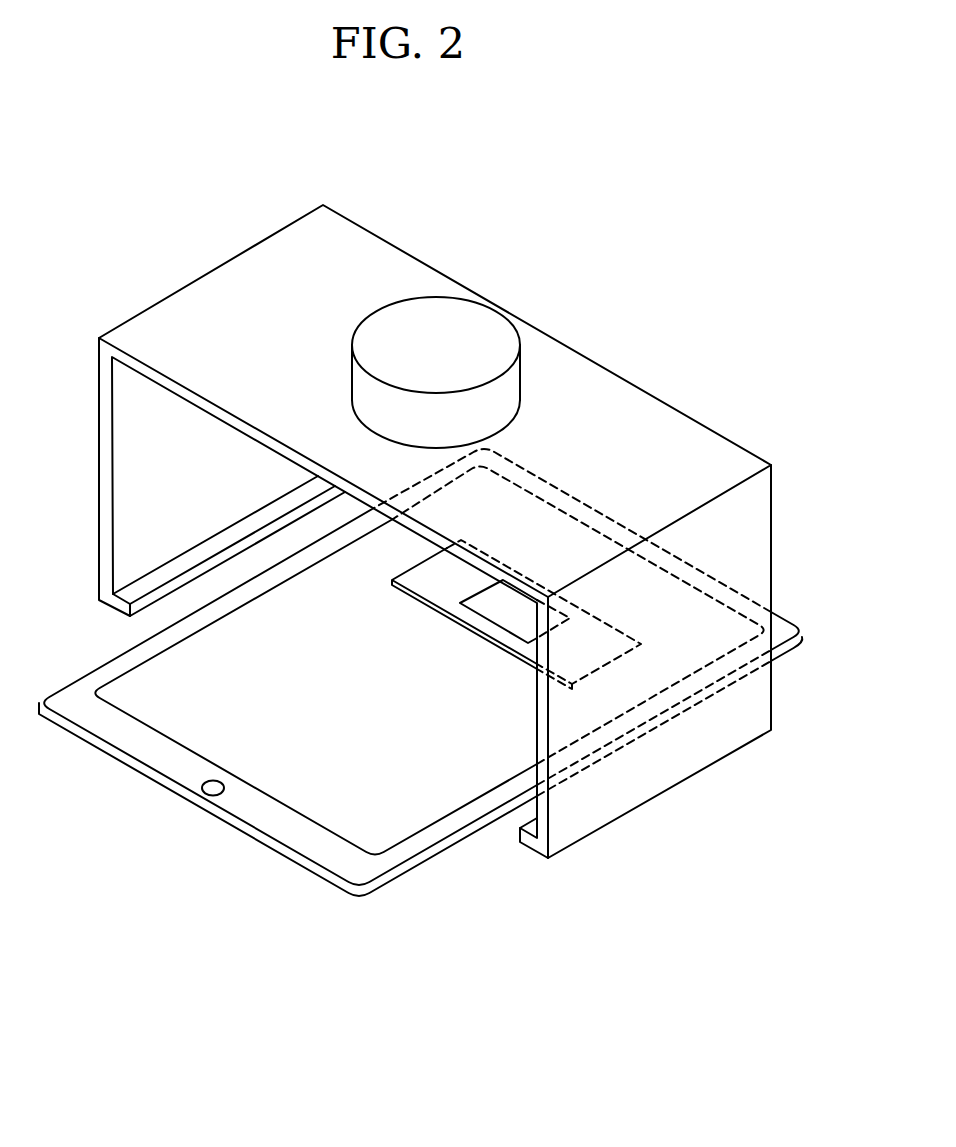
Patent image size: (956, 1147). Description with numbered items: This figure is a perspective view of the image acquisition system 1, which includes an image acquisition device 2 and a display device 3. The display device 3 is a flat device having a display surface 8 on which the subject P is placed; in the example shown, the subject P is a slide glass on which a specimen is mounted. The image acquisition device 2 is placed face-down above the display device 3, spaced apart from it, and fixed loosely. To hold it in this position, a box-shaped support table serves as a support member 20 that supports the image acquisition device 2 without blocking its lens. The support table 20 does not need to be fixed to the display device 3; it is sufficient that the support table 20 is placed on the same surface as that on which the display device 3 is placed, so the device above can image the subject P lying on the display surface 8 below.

The image acquisition system 1 is at (162, 175).
The image acquisition device 2 is at (471, 307).
The support member 20 is at (603, 367).
The display device 3 is at (278, 895).
The display surface 8 is at (398, 811).
The subject P is at (503, 610).